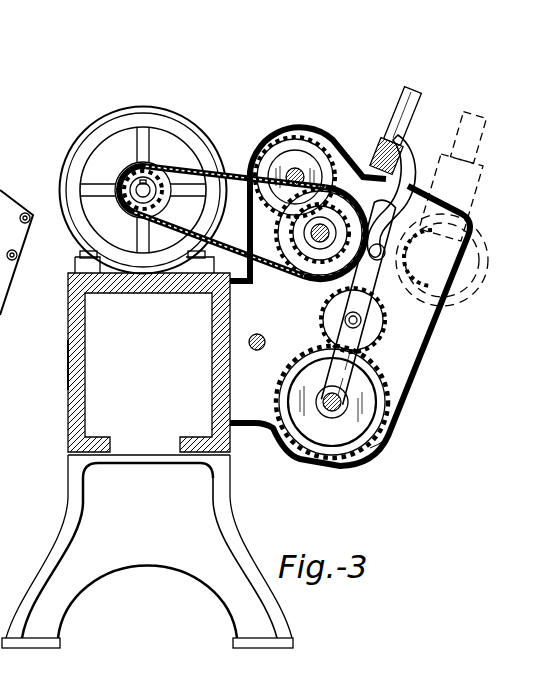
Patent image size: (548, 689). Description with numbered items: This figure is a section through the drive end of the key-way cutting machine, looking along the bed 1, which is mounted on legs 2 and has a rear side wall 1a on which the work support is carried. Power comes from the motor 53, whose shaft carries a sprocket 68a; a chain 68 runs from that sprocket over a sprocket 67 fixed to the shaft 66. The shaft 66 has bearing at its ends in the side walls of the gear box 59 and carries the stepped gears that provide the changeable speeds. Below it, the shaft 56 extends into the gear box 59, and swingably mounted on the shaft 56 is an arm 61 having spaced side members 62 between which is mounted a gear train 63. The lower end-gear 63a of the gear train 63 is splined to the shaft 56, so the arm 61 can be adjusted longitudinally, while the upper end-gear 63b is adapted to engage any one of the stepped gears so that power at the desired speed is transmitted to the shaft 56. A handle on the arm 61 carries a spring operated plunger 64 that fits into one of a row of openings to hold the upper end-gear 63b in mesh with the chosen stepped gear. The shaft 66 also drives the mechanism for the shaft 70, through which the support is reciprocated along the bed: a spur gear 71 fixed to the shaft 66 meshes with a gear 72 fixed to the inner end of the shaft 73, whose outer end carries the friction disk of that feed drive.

The bed 1 is at (136, 351).
The rear side wall 1a is at (68, 366).
The legs 2 is at (218, 494).
The motor 53 is at (205, 112).
The shaft 56 is at (318, 420).
The gear box 59 is at (398, 405).
The arm 61 is at (405, 182).
The side members 62 is at (352, 375).
The gear train 63 is at (337, 320).
The lower end-gear 63a is at (380, 448).
The upper end-gear 63b is at (404, 264).
The spring operated plunger 64 is at (16, 202).
The shaft 66 is at (310, 272).
The sprocket 67 is at (272, 268).
The chain 68 is at (233, 182).
The sprocket 68a is at (123, 198).
The shaft 70 is at (278, 322).
The spur gear 71 is at (330, 206).
The gear 72 is at (362, 175).
The shaft 73 is at (288, 168).